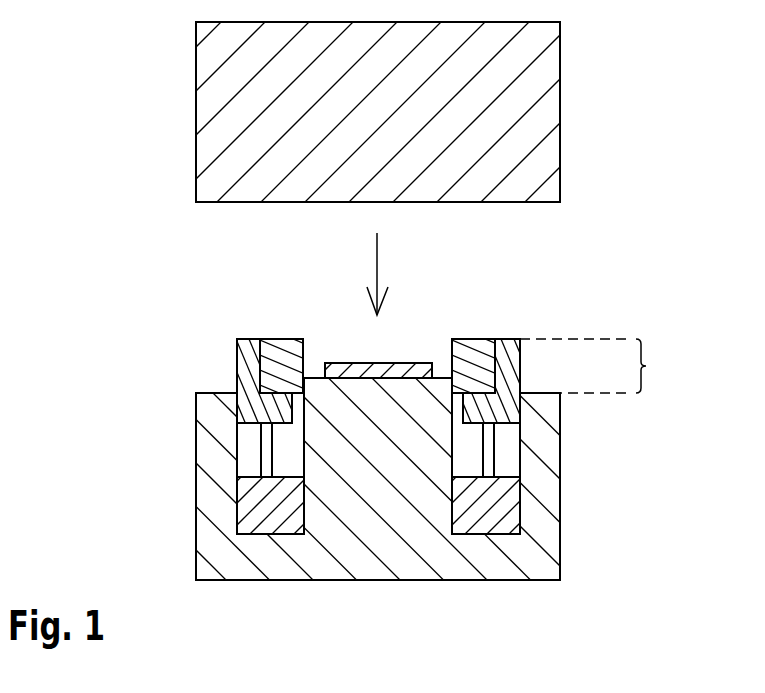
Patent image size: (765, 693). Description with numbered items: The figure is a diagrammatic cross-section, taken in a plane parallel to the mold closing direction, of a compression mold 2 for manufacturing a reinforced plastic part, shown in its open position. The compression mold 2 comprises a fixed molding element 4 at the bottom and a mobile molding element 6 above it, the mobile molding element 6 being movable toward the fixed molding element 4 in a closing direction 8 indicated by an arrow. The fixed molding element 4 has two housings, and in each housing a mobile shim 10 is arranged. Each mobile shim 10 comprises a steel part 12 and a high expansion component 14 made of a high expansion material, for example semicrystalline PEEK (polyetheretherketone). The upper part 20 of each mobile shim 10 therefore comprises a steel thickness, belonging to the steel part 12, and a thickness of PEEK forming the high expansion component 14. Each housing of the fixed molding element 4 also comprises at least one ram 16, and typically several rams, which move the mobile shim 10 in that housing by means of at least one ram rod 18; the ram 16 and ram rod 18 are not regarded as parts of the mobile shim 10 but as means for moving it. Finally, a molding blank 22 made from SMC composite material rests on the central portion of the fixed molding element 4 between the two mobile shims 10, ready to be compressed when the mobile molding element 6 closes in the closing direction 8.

The compression mold 2 is at (374, 452).
The fixed molding element 4 is at (367, 537).
The mobile molding element 6 is at (213, 104).
The closing direction 8 is at (377, 268).
The mobile shim 10 is at (380, 331).
The steel part 12 is at (248, 362).
The high expansion component 14 is at (280, 352).
The ram 16 is at (258, 510).
The ram rod 18 is at (265, 443).
The upper part 20 is at (599, 366).
The molding blank 22 is at (412, 368).